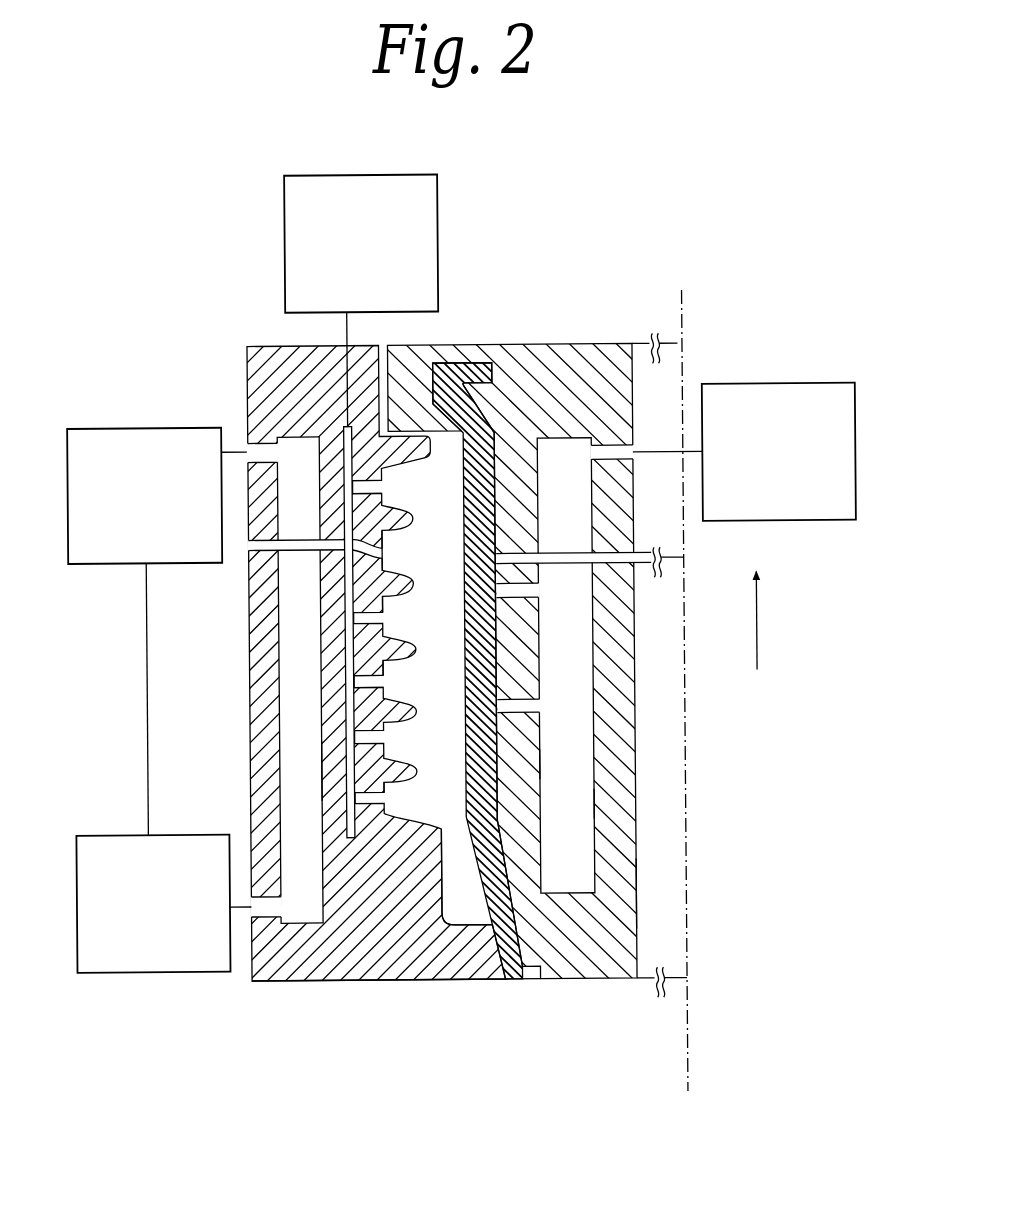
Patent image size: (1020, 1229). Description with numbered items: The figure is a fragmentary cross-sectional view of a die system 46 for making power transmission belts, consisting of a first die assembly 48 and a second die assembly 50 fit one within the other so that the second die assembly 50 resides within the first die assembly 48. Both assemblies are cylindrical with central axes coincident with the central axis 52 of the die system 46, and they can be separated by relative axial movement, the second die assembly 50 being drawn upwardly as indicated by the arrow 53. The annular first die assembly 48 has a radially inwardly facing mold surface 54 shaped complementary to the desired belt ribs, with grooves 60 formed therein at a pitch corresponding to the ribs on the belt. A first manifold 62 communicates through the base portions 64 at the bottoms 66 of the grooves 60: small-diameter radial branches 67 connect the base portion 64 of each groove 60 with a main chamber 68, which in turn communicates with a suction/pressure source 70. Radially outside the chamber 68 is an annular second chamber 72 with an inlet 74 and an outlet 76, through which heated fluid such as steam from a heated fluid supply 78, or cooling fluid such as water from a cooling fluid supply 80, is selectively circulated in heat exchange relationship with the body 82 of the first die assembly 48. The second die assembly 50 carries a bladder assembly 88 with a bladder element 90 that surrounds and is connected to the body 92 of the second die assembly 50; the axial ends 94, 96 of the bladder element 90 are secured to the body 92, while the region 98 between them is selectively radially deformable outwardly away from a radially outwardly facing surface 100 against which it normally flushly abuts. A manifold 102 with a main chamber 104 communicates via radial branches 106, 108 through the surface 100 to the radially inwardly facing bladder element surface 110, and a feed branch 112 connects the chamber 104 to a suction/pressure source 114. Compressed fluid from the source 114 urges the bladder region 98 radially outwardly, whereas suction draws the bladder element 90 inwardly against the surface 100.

The die system 46 is at (597, 253).
The first die assembly 48 is at (287, 342).
The second die assembly 50 is at (578, 338).
The central axis 52 is at (684, 997).
The arrow 53 is at (757, 633).
The mold surface 54 is at (384, 492).
The grooves 60 is at (384, 560).
The first manifold 62 is at (345, 426).
The base portions 64 is at (384, 687).
The bottoms 66 is at (388, 747).
The radial branches 67 is at (384, 662).
The main chamber 68 is at (321, 771).
The suction/pressure source 70 is at (346, 304).
The second chamber 72 is at (322, 654).
The inlet 74 is at (268, 457).
The outlet 76 is at (268, 896).
The heated fluid supply 78 is at (122, 553).
The cooling fluid supply 80 is at (129, 962).
The body 82 is at (351, 961).
The bladder assembly 88 is at (430, 774).
The bladder element 90 is at (498, 650).
The body 92 is at (634, 894).
The axial end 94 is at (464, 364).
The axial end 96 is at (518, 980).
The region 98 is at (500, 756).
The radially outwardly facing surface 100 is at (468, 870).
The manifold 102 is at (542, 764).
The main chamber 104 is at (567, 807).
The radial branch 106 is at (515, 708).
The radial branch 108 is at (524, 593).
The bladder element surface 110 is at (498, 740).
The feed branch 112 is at (608, 454).
The suction/pressure source 114 is at (762, 514).